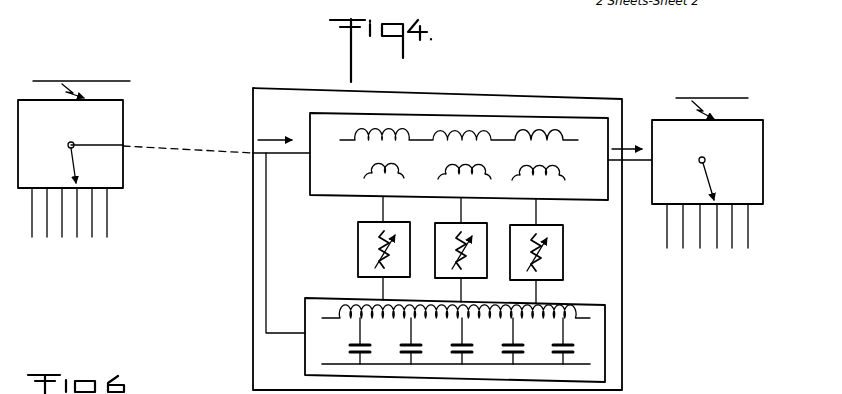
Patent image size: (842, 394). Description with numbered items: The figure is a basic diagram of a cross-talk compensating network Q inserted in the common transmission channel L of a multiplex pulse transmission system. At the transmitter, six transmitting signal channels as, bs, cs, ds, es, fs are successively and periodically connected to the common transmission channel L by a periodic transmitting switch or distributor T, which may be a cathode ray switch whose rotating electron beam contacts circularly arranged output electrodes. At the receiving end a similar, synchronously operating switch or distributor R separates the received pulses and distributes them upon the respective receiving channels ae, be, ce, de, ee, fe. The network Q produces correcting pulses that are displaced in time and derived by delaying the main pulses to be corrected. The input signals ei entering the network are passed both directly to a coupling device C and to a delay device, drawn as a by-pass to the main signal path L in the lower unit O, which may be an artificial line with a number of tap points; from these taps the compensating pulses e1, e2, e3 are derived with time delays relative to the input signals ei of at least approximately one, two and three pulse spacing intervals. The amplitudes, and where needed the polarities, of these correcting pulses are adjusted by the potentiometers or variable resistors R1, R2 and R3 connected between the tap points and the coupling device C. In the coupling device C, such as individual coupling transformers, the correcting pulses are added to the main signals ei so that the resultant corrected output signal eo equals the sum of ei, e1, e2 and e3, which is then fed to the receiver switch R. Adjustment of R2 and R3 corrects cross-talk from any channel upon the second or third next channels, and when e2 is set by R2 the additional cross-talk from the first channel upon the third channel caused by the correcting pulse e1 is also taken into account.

The transmitting switch or distributor T is at (78, 170).
The common transmission channel L is at (191, 148).
The coupling device C is at (453, 112).
The input signals ei is at (275, 129).
The corrected output signal eo is at (630, 144).
The first compensating pulse e1 is at (382, 206).
The second compensating pulse e2 is at (460, 210).
The third compensating pulse e3 is at (535, 212).
The first variable resistor R1 is at (357, 250).
The second variable resistor R2 is at (434, 255).
The third variable resistor R3 is at (563, 262).
The output filter network O is at (605, 349).
The cross-talk compensating network Q is at (622, 388).
The receiving switch or distributor R is at (714, 184).
The first transmitting signal channel as is at (29, 251).
The second transmitting signal channel bs is at (45, 251).
The third transmitting signal channel cs is at (60, 251).
The fourth transmitting signal channel ds is at (75, 251).
The fifth transmitting signal channel es is at (90, 251).
The sixth transmitting signal channel fs is at (104, 251).
The first receiving channel ae is at (665, 263).
The second receiving channel be is at (682, 263).
The third receiving channel ce is at (698, 263).
The fourth receiving channel de is at (715, 263).
The fifth receiving channel ee is at (731, 263).
The sixth receiving channel fe is at (745, 263).